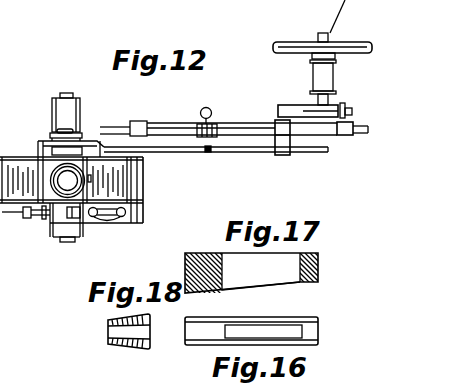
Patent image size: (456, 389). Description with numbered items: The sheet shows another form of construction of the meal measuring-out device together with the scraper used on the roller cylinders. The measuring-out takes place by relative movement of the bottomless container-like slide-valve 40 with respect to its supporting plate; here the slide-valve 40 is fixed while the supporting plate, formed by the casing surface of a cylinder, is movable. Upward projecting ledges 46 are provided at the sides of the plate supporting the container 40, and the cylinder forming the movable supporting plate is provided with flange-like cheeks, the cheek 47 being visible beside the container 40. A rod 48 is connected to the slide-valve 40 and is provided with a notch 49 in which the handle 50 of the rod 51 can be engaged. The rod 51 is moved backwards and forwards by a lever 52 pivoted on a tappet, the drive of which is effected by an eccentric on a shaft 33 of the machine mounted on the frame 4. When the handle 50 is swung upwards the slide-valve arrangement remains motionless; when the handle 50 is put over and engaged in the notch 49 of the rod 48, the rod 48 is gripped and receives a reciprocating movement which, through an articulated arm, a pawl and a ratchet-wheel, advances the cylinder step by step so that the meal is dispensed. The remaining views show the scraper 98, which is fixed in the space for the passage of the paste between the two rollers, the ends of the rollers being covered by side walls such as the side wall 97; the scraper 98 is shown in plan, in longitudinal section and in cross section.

In FIG. 12, the base frame 4 is at (128, 223).
In FIG. 12, the pulley 33 is at (284, 42).
In FIG. 12, the container-like slide-valve 40 is at (51, 239).
In FIG. 12, the upward projecting ledges 46 is at (17, 157).
In FIG. 12, the clamp bolt 47 is at (17, 204).
In FIG. 12, the rod 48 is at (240, 153).
In FIG. 12, the notch 49 is at (209, 153).
In FIG. 12, the handle 50 is at (211, 109).
In FIG. 12, the rod 51 is at (231, 133).
In FIG. 12, the lever 52 is at (378, 116).
In FIG. 12, the side wall 97 is at (11, 76).
In FIG. 17, the scraper 98 is at (293, 283).